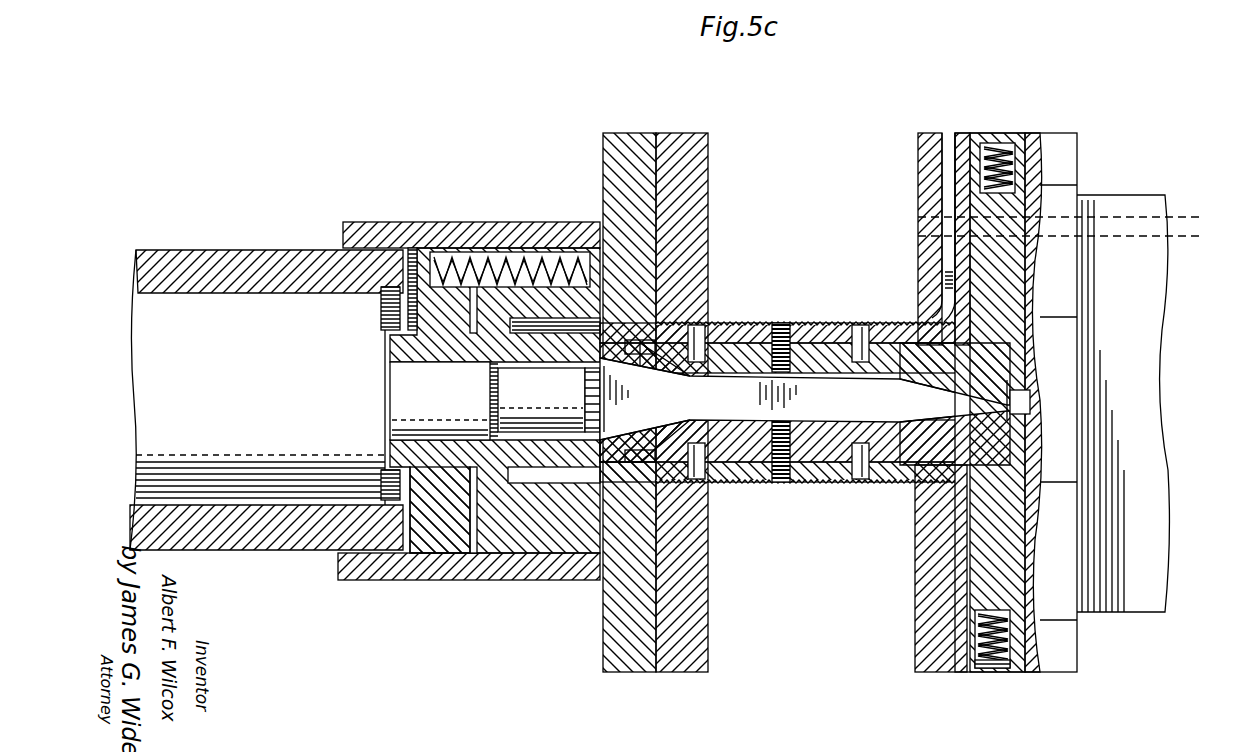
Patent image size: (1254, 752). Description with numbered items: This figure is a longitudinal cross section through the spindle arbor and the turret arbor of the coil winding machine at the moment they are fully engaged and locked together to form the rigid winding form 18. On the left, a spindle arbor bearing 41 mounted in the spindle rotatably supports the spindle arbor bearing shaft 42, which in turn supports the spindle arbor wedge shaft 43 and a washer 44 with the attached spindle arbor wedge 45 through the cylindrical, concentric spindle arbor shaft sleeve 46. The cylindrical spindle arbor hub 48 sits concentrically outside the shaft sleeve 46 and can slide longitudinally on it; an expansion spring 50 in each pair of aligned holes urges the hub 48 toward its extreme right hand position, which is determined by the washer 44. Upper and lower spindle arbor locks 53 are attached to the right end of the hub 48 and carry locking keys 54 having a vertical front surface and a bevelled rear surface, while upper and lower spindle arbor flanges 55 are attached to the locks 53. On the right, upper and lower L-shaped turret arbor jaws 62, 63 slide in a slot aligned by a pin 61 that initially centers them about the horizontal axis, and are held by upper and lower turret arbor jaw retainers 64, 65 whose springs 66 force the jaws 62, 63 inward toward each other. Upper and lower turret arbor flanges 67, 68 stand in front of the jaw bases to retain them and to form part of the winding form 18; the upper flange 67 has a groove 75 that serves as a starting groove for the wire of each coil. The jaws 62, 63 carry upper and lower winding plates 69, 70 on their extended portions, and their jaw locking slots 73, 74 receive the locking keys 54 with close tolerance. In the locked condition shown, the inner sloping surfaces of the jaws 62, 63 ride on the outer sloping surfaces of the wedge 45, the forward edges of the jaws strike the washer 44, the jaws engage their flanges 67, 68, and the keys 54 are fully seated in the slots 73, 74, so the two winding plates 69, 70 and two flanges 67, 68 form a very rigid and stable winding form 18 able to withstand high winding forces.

The winding form 18 is at (912, 276).
The spindle arbor bearing 41 is at (258, 387).
The spindle arbor bearing shaft 42 is at (443, 401).
The spindle arbor wedge shaft 43 is at (543, 405).
The washer 44 is at (598, 400).
The spindle arbor wedge 45 is at (738, 392).
The spindle arbor shaft sleeve 46 is at (447, 525).
The spindle arbor hub 48 is at (508, 600).
The expansion spring 50 is at (445, 262).
The spindle arbor lock 53 is at (630, 133).
The locking key 54 is at (625, 336).
The spindle arbor flange 55 is at (684, 133).
The pin 61 is at (1032, 400).
The upper turret arbor jaw 62 is at (905, 350).
The lower turret arbor jaw 63 is at (945, 442).
The upper turret arbor jaw retainer 64 is at (1030, 150).
The lower turret arbor jaw retainer 65 is at (1012, 670).
The spring 66 is at (996, 148).
The upper turret arbor flange 67 is at (920, 196).
The lower turret arbor flange 68 is at (918, 595).
The upper winding plate 69 is at (795, 328).
The lower winding plate 70 is at (832, 465).
The upper jaw locking slot 73 is at (648, 355).
The lower jaw locking slot 74 is at (640, 448).
The groove 75 is at (940, 242).